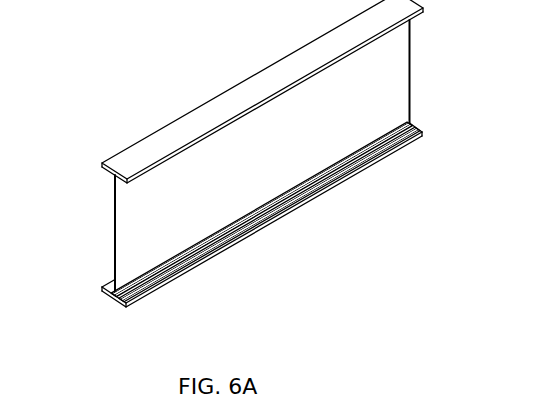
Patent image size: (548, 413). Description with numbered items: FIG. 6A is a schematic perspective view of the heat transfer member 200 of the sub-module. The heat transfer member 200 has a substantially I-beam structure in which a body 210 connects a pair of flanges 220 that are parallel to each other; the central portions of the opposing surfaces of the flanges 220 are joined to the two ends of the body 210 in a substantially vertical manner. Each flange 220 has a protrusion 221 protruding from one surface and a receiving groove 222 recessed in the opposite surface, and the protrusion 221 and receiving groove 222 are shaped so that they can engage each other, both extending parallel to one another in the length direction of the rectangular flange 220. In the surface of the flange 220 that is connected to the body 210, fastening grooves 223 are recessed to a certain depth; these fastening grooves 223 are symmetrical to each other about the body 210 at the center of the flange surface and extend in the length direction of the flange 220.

The heat transfer member 200 is at (160, 53).
The body 210 is at (115, 240).
The flange 220 is at (158, 129).
The protrusion 221 is at (102, 165).
The receiving groove 222 is at (128, 180).
The fastening groove 223 is at (103, 287).